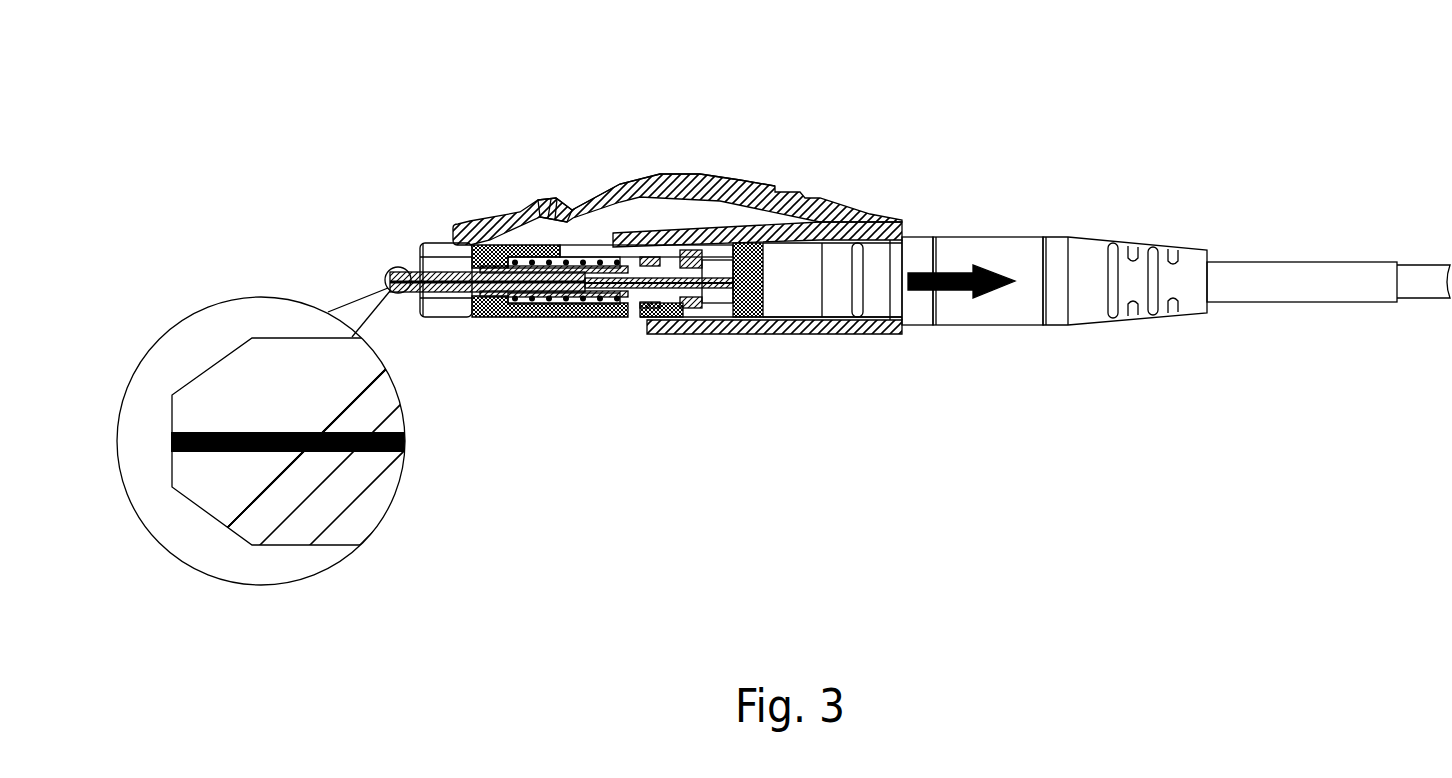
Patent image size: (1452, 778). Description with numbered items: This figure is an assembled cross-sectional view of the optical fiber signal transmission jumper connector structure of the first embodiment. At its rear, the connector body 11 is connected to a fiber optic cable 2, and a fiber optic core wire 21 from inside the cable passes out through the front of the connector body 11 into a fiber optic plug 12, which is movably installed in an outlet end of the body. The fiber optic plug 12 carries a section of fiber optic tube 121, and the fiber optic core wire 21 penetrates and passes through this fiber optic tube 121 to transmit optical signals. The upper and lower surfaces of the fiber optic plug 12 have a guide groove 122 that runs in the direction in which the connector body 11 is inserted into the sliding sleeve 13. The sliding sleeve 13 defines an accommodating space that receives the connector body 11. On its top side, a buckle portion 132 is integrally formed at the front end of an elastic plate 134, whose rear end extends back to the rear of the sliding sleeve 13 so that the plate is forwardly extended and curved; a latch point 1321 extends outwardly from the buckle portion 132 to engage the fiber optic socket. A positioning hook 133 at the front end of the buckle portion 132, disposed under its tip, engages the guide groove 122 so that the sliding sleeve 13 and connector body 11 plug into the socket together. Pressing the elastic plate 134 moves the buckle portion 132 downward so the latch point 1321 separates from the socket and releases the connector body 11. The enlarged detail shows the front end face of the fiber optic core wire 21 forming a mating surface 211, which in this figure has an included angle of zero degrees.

The fiber optic cable 2 is at (1295, 262).
The connector body 11 is at (807, 278).
The fiber optic plug 12 is at (547, 317).
The sliding sleeve 13 is at (793, 335).
The fiber optic core wire 21 is at (440, 317).
The fiber optic tube 121 is at (482, 317).
The guide groove 122 is at (420, 243).
The buckle portion 132 is at (523, 212).
The positioning hook 133 is at (442, 243).
The elastic plate 134 is at (663, 176).
The mating surface 211 is at (172, 441).
The latch point 1321 is at (558, 198).